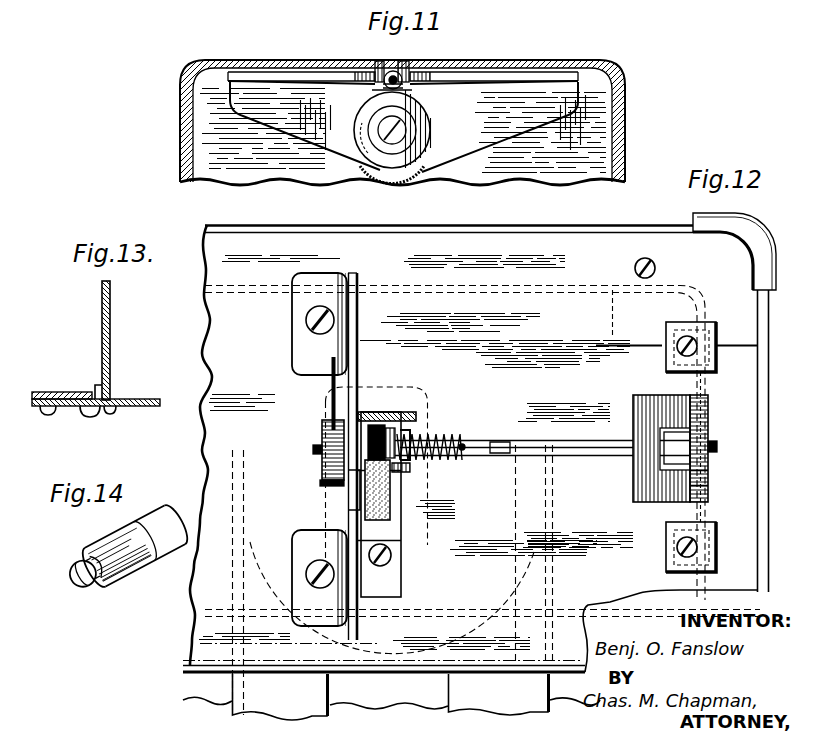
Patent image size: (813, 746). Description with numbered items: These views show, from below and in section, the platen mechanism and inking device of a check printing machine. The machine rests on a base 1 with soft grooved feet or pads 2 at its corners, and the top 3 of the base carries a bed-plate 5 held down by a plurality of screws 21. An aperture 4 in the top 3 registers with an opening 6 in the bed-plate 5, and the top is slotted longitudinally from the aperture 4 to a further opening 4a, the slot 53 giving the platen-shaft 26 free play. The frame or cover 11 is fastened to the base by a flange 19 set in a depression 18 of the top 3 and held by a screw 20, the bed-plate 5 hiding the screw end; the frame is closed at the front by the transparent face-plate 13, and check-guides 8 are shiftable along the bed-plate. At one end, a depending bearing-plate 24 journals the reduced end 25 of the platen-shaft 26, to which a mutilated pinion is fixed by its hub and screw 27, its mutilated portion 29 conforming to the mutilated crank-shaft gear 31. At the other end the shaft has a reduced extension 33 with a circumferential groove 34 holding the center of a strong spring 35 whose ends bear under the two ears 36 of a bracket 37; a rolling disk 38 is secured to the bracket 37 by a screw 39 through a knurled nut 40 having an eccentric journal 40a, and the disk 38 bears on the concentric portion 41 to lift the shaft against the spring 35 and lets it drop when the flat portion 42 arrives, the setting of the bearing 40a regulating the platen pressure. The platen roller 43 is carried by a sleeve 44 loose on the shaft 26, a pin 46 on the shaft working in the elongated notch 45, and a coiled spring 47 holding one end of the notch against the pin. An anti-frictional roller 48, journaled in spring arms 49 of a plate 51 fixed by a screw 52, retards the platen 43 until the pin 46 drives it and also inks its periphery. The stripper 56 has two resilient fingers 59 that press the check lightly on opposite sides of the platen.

In FIG. 12, the base 1 is at (628, 222).
In FIG. 12, the grooved feet or pads 2 is at (742, 236).
In FIG. 11, the top of the base 3 is at (530, 60).
In FIG. 12, the top of the base 3 is at (573, 576).
In FIG. 13, the top of the base 3 is at (146, 406).
In FIG. 12, the aperture 4 is at (415, 414).
In FIG. 12, the opening 4a is at (633, 398).
In FIG. 12, the bed-plate 5 is at (362, 692).
In FIG. 13, the bed-plate 5 is at (58, 392).
In FIG. 12, the opening 6 is at (392, 505).
In FIG. 12, the check-guides 8 is at (232, 590).
In FIG. 12, the frame or cover 11 is at (611, 316).
In FIG. 13, the frame or cover 11 is at (110, 320).
In FIG. 12, the glass-plate or transparent face-plate 13 is at (674, 342).
In FIG. 12, the depression 18 is at (666, 335).
In FIG. 13, the depression 18 is at (111, 414).
In FIG. 12, the flange 19 is at (706, 318).
In FIG. 13, the flange 19 is at (110, 385).
In FIG. 12, the screw 20 is at (686, 338).
In FIG. 13, the screw 20 is at (92, 416).
In FIG. 12, the screws 21 is at (657, 268).
In FIG. 13, the screws 21 is at (44, 413).
In FIG. 12, the depending flange or bearing-plate 24 is at (708, 412).
In FIG. 12, the reduced end of the platen-shaft 25 is at (717, 447).
In FIG. 12, the platen-shaft 26 is at (586, 457).
In FIG. 14, the platen-shaft 26 is at (170, 514).
In FIG. 12, the hub and screw 27 is at (668, 460).
In FIG. 12, the mutilated portion 29 is at (695, 440).
In FIG. 12, the gear 31 is at (705, 480).
In FIG. 11, the reduced extension 33 is at (385, 84).
In FIG. 14, the reduced extension 33 is at (72, 585).
In FIG. 14, the circumferential groove 34 is at (80, 562).
In FIG. 11, the spring 35 is at (448, 78).
In FIG. 12, the spring 35 is at (322, 456).
In FIG. 11, the ears 36 is at (258, 82).
In FIG. 12, the ears 36 is at (292, 335).
In FIG. 11, the bracket 37 is at (404, 127).
In FIG. 12, the bracket 37 is at (357, 375).
In FIG. 11, the rolling disk 38 is at (366, 121).
In FIG. 12, the rolling disk 38 is at (328, 484).
In FIG. 11, the screw 39 is at (378, 133).
In FIG. 12, the screw 39 is at (313, 452).
In FIG. 11, the knurled nut 40 is at (416, 121).
In FIG. 12, the knurled nut 40 is at (322, 430).
In FIG. 11, the eccentric journal or adjustable bearing 40a is at (392, 168).
In FIG. 14, the smooth or concentric portion 41 is at (124, 582).
In FIG. 11, the flat or eccentric portion 42 is at (370, 104).
In FIG. 14, the flat or eccentric portion 42 is at (150, 562).
In FIG. 11, the platen roller or wheel 43 is at (402, 70).
In FIG. 12, the platen roller or wheel 43 is at (375, 424).
In FIG. 11, the collar or sleeve 44 is at (384, 68).
In FIG. 12, the collar or sleeve 44 is at (392, 426).
In FIG. 12, the elongated notch or opening 45 is at (408, 466).
In FIG. 12, the pin 46 is at (412, 432).
In FIG. 12, the spring 47 is at (452, 438).
In FIG. 12, the anti-frictional roller 48 is at (392, 495).
In FIG. 12, the spring arms 49 is at (348, 508).
In FIG. 12, the plate 51 is at (401, 580).
In FIG. 12, the screw 52 is at (392, 555).
In FIG. 12, the slot 53 is at (516, 457).
In FIG. 12, the stripper or presser 56 is at (357, 546).
In FIG. 12, the resilient fingers 59 is at (428, 400).